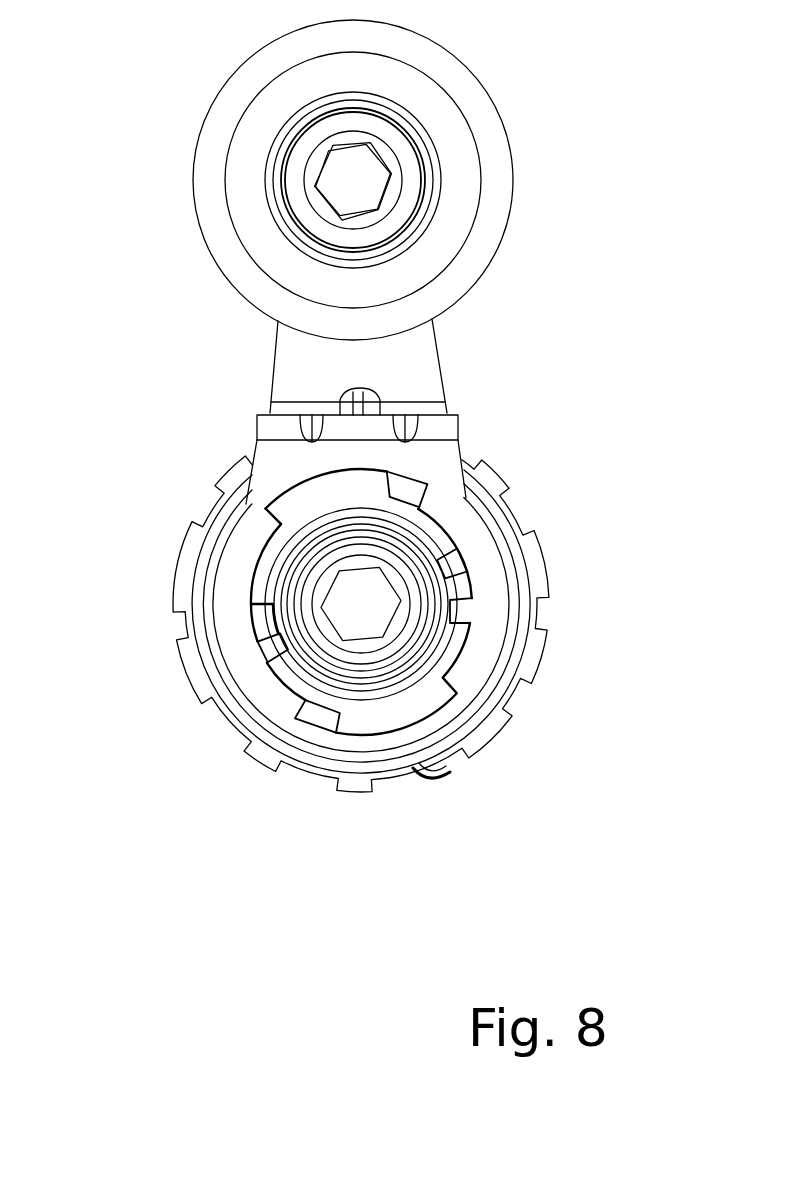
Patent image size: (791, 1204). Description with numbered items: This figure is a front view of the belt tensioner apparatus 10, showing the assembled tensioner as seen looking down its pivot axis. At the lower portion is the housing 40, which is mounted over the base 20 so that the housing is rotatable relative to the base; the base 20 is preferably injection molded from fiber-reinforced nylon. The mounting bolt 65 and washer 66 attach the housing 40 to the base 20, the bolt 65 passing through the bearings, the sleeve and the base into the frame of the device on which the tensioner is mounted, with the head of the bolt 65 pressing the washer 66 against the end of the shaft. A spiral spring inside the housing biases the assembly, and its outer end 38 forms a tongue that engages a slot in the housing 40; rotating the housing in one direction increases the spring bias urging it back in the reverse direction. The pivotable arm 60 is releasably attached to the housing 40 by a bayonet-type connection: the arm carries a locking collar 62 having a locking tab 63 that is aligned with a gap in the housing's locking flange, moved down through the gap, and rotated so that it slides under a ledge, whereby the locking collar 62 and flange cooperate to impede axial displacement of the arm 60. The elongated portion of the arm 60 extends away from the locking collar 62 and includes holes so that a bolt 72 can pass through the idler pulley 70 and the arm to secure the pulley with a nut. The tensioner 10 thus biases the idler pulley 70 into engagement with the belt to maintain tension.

The tensioner apparatus 10 is at (213, 438).
The base 20 is at (502, 488).
The outer end of the spring 38 is at (440, 795).
The housing 40 is at (512, 546).
The pivotable arm 60 is at (420, 367).
The locking collar 62 is at (454, 677).
The locking tab 63 is at (258, 612).
The mounting bolt 65 is at (362, 606).
The washer 66 is at (396, 627).
The idler pulley 70 is at (492, 235).
The bolt 72 is at (331, 181).